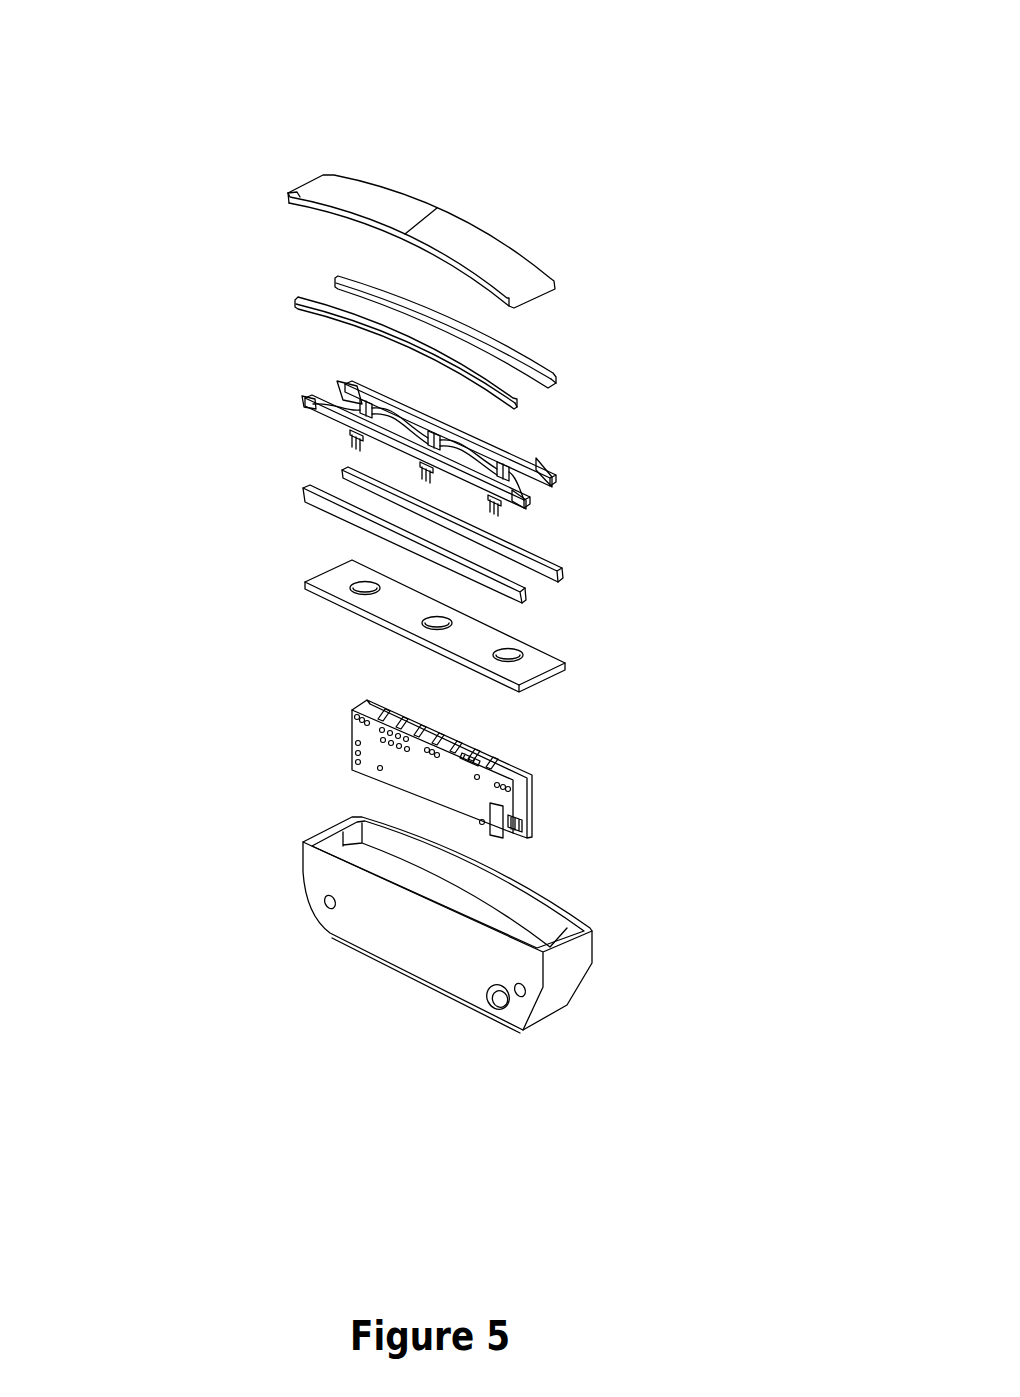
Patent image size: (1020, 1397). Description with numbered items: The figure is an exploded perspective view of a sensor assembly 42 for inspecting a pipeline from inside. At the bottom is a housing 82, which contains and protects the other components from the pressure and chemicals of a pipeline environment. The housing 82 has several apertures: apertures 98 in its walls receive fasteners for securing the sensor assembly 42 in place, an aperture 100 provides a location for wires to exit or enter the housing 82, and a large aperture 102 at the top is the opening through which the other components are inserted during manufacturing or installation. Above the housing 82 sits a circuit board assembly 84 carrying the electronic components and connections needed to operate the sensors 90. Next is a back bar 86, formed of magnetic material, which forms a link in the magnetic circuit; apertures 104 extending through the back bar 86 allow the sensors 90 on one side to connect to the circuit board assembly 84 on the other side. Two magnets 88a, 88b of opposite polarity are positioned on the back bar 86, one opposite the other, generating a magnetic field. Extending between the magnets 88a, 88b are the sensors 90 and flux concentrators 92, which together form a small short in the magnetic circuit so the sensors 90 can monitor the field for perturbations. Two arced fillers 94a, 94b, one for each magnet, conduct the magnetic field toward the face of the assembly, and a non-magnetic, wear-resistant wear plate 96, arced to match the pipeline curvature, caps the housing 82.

The sensor assembly 42 is at (518, 122).
The wear plate 96 is at (515, 248).
The filler 94a is at (297, 300).
The filler 94b is at (547, 368).
The flux concentrator 92 is at (338, 382).
The sensor 90 is at (500, 480).
The magnet 88a is at (303, 488).
The magnet 88b is at (563, 567).
The back bar 86 is at (565, 663).
The aperture 104 is at (355, 596).
The circuit board assembly 84 is at (552, 768).
The housing 82 is at (622, 975).
The aperture 102 is at (552, 892).
The aperture 98 is at (318, 910).
The aperture 100 is at (488, 1013).